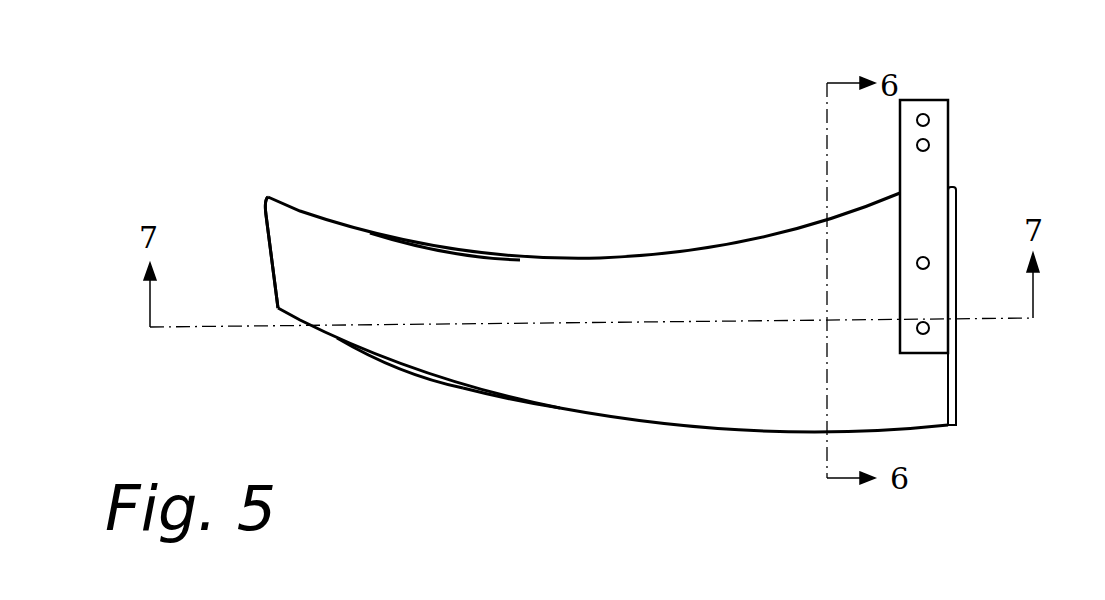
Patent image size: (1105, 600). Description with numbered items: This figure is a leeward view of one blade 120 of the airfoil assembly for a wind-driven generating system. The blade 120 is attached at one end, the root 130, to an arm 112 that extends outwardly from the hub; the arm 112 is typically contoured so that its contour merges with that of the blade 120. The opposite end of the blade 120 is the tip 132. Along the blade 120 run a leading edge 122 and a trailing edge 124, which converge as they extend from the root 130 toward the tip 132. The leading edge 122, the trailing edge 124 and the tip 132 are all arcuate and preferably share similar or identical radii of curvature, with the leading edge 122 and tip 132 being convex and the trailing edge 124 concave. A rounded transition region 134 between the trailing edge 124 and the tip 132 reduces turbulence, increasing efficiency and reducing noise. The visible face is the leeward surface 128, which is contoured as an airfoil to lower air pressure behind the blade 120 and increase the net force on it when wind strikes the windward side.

The arm 112 is at (937, 190).
The blade 120 is at (572, 242).
The leading edge 122 is at (463, 388).
The trailing edge 124 is at (403, 233).
The leeward surface 128 is at (518, 368).
The root 130 is at (957, 370).
The tip 132 is at (262, 248).
The transition region 134 is at (262, 193).